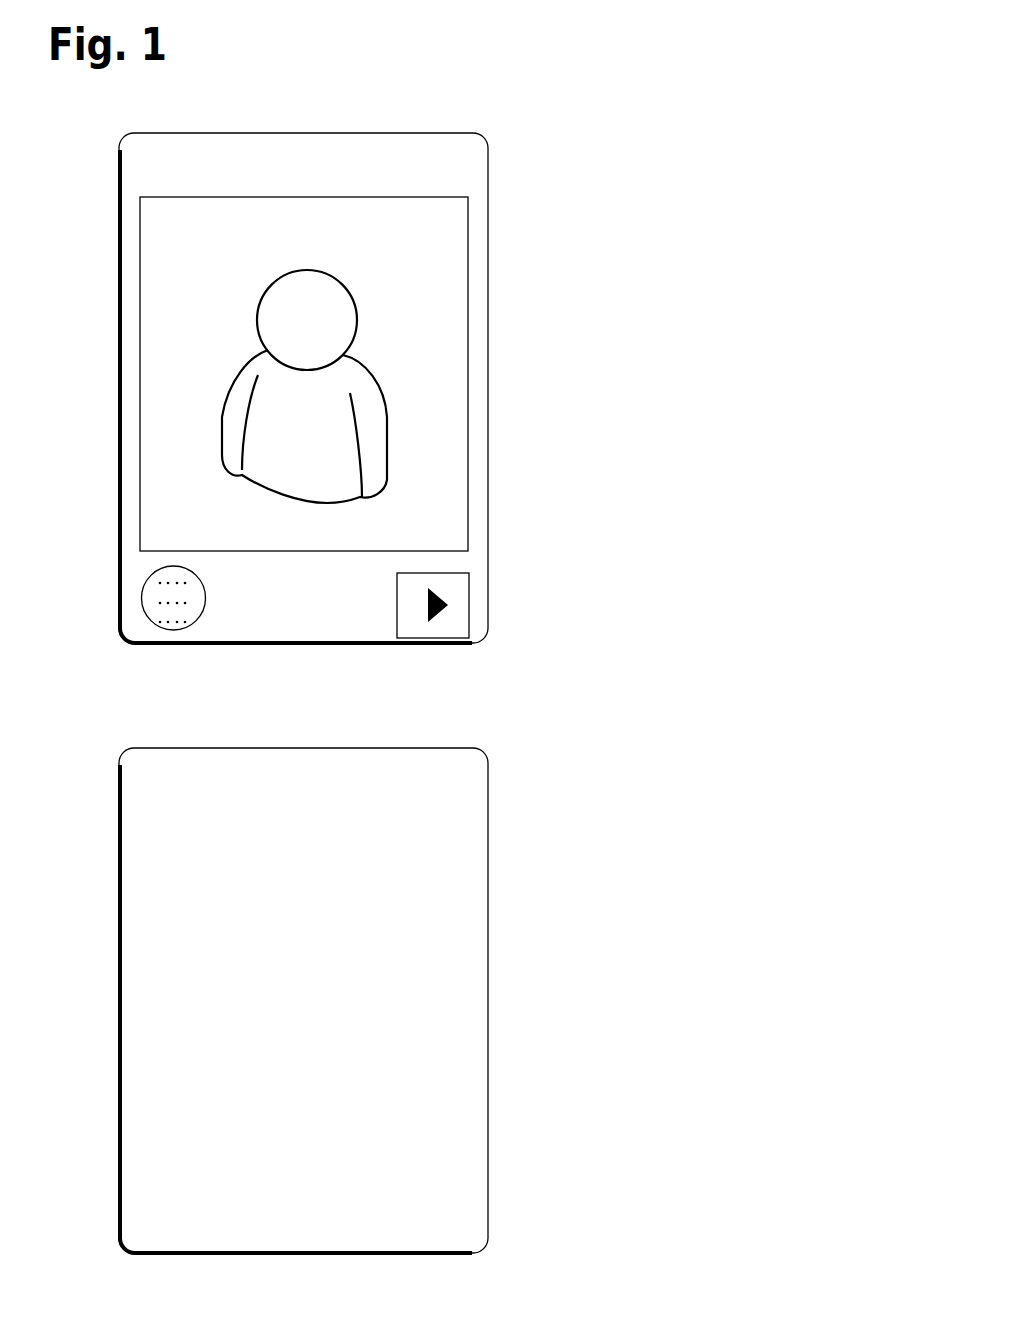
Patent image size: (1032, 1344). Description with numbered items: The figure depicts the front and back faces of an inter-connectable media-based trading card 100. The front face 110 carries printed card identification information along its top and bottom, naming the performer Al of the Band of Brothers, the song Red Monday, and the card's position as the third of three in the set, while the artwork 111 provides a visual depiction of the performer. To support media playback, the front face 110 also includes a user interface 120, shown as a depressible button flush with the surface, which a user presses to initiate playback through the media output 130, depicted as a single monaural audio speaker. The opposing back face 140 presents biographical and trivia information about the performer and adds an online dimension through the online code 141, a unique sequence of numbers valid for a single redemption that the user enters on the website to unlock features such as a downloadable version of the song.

The media-based trading card 100 is at (842, 89).
The front face 110 is at (468, 172).
The artwork 111 is at (470, 385).
The user interface 120 is at (468, 607).
The media output 130 is at (173, 630).
The back face 140 is at (450, 783).
The online code 141 is at (362, 1130).